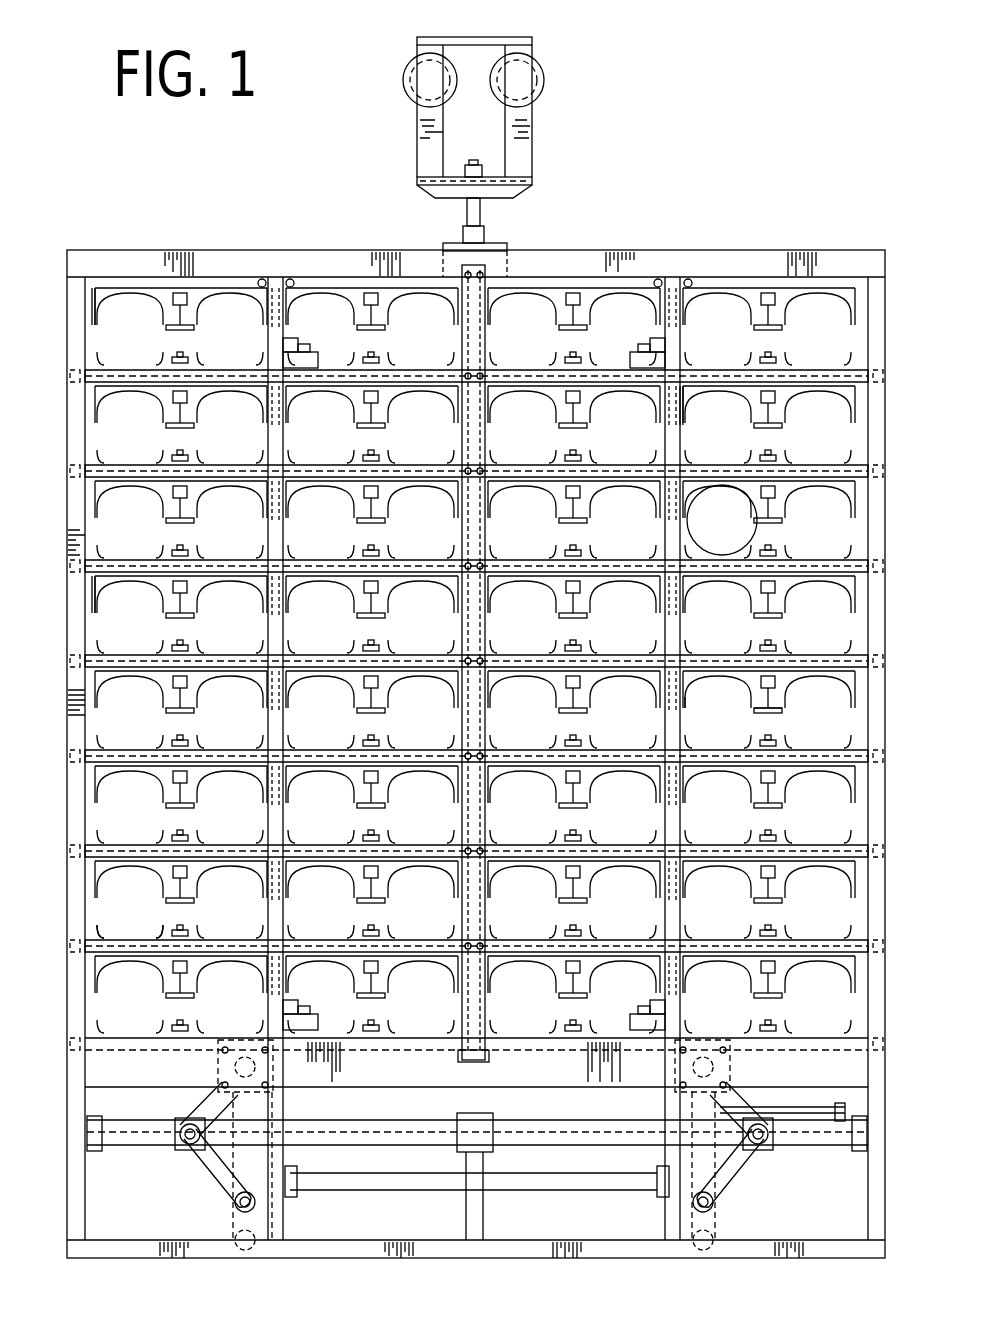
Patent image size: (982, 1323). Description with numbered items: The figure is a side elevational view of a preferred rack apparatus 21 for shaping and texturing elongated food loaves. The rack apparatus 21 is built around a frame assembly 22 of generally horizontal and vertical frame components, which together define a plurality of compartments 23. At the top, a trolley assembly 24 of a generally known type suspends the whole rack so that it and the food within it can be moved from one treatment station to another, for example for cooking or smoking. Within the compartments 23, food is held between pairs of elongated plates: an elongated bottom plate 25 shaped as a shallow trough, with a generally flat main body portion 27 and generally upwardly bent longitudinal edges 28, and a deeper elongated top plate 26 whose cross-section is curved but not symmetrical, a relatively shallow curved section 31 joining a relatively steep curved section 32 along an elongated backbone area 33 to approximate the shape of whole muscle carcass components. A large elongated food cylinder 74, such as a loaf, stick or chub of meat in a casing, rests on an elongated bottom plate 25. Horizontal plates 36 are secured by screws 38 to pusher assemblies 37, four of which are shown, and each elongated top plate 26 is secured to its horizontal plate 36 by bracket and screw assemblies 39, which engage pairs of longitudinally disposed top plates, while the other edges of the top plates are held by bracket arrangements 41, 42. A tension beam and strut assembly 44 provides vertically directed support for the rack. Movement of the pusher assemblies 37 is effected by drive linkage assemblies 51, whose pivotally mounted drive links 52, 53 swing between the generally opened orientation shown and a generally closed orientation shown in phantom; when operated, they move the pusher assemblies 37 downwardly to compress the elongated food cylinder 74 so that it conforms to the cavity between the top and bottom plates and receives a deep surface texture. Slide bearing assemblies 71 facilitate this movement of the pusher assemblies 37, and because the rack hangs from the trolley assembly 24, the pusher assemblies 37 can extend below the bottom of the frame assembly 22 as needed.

The rack apparatus 21 is at (98, 232).
The frame assembly 22 is at (73, 525).
The compartments 23 is at (328, 337).
The trolley assembly 24 is at (415, 82).
The elongated bottom plate 25 is at (107, 750).
The elongated top plate 26 is at (110, 300).
The main body portion 27 is at (128, 938).
The longitudinal edges 28 is at (103, 934).
The shallow curved section 31 is at (692, 700).
The steep curved section 32 is at (752, 700).
The backbone area 33 is at (730, 673).
The horizontal plate 36 is at (755, 285).
The pusher assembly 37 is at (672, 305).
The screws 38 is at (655, 275).
The bracket and screw assemblies 39 is at (201, 270).
The bracket arrangement 41 is at (858, 442).
The bracket arrangement 42 is at (688, 442).
The tension beam and strut assembly 44 is at (478, 272).
The drive linkage assembly 51 is at (175, 1165).
The drive link 52 is at (727, 1175).
The drive link 53 is at (217, 1098).
The slide bearing assembly 71 is at (643, 340).
The elongated food cylinder 74 is at (707, 533).